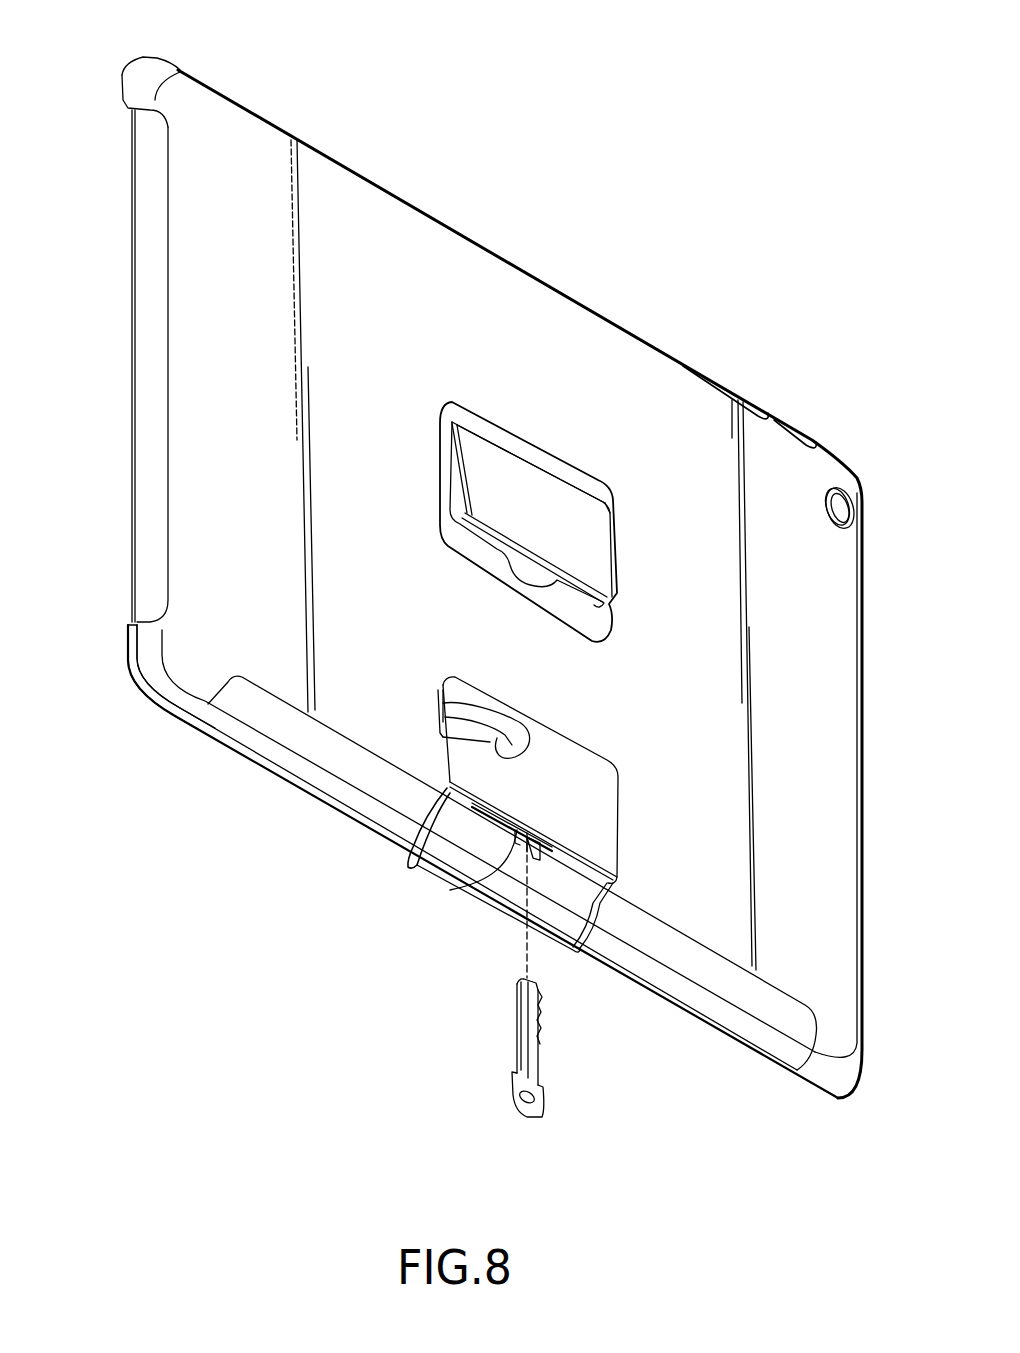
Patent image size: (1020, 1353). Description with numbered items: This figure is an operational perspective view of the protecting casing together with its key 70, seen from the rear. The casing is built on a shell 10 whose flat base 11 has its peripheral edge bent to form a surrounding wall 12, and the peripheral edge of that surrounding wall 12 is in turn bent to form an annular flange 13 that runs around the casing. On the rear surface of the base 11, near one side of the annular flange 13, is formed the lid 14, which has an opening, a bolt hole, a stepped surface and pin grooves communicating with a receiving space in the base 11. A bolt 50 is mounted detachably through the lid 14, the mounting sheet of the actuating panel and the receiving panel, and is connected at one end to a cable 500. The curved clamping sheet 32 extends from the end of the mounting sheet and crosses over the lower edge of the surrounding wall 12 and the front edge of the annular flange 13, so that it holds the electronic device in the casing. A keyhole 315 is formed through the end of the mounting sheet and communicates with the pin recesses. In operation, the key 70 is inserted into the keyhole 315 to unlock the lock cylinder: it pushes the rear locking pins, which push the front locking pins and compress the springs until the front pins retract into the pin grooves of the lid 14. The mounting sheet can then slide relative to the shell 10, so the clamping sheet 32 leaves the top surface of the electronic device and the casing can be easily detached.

The shell 10 is at (403, 183).
The base 11 is at (487, 268).
The surrounding wall 12 is at (160, 72).
The annular flange 13 is at (128, 643).
The lid 14 is at (600, 825).
The clamping sheet 32 is at (418, 868).
The keyhole 315 is at (470, 888).
The bolt 50 is at (600, 782).
The cable 500 is at (483, 727).
The key 70 is at (545, 1105).